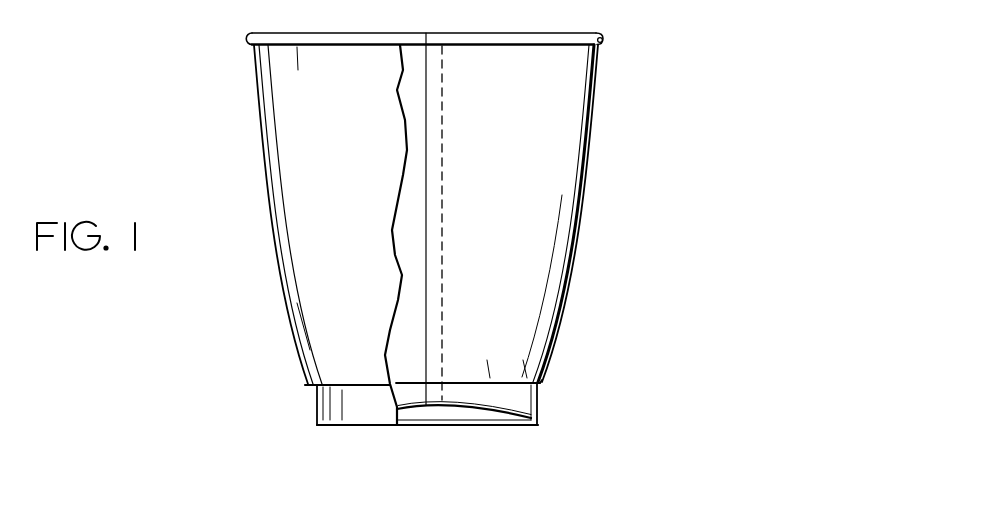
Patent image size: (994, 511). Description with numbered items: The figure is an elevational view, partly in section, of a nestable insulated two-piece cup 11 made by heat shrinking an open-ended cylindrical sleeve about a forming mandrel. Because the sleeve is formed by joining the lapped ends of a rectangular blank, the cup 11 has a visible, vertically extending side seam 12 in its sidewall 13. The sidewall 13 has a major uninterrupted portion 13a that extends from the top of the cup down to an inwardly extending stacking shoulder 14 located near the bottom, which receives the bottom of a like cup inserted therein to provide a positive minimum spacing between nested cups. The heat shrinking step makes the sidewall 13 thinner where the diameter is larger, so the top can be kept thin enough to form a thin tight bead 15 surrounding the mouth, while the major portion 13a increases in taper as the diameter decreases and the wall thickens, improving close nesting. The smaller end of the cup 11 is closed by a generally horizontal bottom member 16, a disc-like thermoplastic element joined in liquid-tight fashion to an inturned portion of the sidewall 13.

The cup 11 is at (588, 224).
The side seam 12 is at (428, 190).
The sidewall 13 is at (587, 160).
The major uninterrupted portion 13a is at (571, 265).
The stacking shoulder 14 is at (538, 392).
The bead 15 is at (605, 40).
The bottom member 16 is at (460, 415).